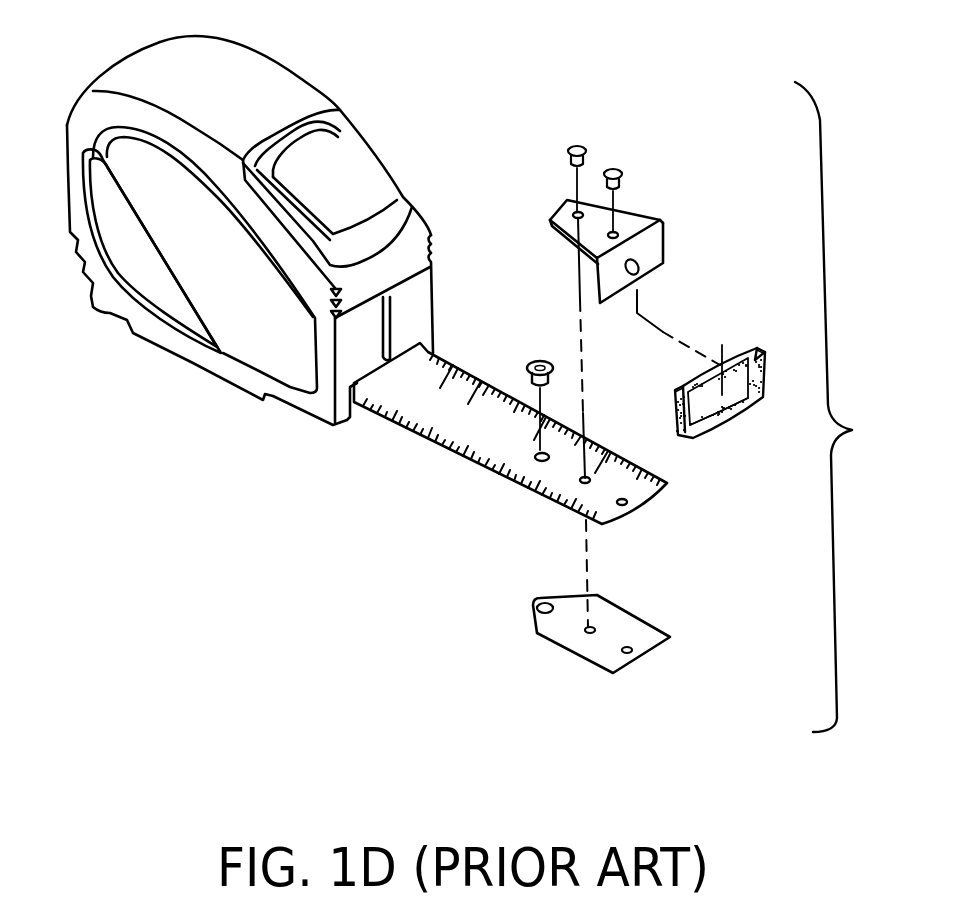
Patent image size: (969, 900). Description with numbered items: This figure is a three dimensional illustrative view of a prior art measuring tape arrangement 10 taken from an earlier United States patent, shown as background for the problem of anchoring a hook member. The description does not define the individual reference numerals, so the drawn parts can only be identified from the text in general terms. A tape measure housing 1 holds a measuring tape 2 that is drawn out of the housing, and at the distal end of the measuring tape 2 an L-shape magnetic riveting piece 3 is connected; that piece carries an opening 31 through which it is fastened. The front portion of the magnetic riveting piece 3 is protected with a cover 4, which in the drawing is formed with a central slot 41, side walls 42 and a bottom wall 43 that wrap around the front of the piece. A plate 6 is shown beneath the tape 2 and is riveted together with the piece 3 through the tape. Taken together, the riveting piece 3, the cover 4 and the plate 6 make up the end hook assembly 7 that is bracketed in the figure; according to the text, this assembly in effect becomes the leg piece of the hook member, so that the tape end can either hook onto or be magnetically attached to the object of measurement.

The tape measure assembly 10 is at (548, 81).
The housing 1 is at (303, 87).
The tape blade 2 is at (457, 364).
The bracket 3 is at (630, 227).
The hole of bracket 31 is at (643, 263).
The end hook 4 is at (768, 378).
The slot 41 is at (730, 363).
The side wall 42 is at (753, 350).
The bottom wall 43 is at (735, 415).
The plate 6 is at (620, 620).
The hook assembly 7 is at (837, 407).